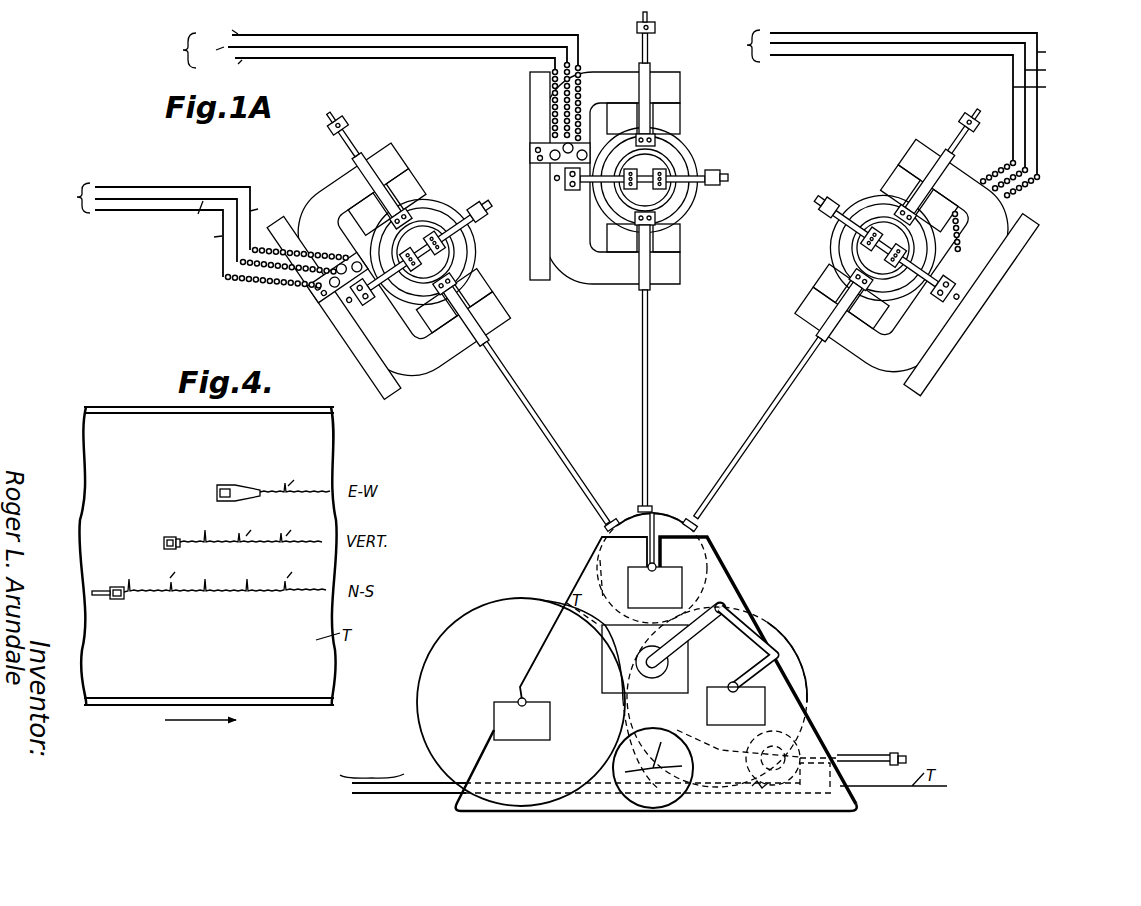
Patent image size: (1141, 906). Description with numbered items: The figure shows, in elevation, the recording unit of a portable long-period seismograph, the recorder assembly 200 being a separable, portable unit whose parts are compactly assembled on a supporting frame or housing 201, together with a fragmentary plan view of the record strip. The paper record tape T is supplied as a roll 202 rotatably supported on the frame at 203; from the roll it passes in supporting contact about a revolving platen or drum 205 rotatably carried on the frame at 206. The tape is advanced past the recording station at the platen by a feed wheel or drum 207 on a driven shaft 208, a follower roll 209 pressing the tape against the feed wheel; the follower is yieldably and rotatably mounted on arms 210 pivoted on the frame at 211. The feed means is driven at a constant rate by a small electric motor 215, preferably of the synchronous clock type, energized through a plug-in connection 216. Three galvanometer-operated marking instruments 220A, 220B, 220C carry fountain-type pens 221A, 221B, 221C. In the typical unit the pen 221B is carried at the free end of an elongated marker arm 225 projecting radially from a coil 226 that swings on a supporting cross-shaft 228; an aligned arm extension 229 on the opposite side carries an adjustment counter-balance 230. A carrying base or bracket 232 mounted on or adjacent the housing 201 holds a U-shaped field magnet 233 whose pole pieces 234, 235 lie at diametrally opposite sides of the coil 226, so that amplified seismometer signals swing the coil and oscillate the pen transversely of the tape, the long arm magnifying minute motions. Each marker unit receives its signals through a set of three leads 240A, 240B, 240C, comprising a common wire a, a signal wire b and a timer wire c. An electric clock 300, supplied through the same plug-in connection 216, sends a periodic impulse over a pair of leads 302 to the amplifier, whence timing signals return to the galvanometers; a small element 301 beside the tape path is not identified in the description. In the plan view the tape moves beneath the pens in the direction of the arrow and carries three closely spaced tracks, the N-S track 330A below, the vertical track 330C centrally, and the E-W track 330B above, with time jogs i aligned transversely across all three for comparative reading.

In FIG. 1A, the recorder assembly 200 is at (770, 550).
In FIG. 1A, the supporting frame or housing 201 is at (812, 722).
In FIG. 1A, the roll 202 is at (427, 663).
In FIG. 1A, the roll support 203 is at (527, 699).
In FIG. 1A, the revolving platen or drum 205 is at (666, 518).
In FIG. 4, the revolving platen or drum 205 is at (294, 706).
In FIG. 1A, the platen mounting 206 is at (655, 585).
In FIG. 1A, the feed wheel or drum 207 is at (797, 653).
In FIG. 1A, the driven shaft 208 is at (731, 683).
In FIG. 1A, the follower roll 209 is at (650, 686).
In FIG. 1A, the arm 210 is at (696, 636).
In FIG. 1A, the pivot 211 is at (727, 606).
In FIG. 1A, the electric motor 215 is at (822, 744).
In FIG. 1A, the plug-in connection 216 is at (841, 744).
In FIG. 1A, the marking or recording instrument 220A is at (483, 376).
In FIG. 1A, the marking or recording instrument 220B is at (875, 307).
In FIG. 1A, the marking or recording instrument 220C is at (686, 314).
In FIG. 1A, the marker, stylus or pen 221A is at (606, 526).
In FIG. 4, the marker, stylus or pen 221A is at (115, 600).
In FIG. 1A, the marker, stylus or pen 221B is at (700, 526).
In FIG. 4, the marker, stylus or pen 221B is at (248, 487).
In FIG. 1A, the marker, stylus or pen 221C is at (641, 505).
In FIG. 4, the marker, stylus or pen 221C is at (166, 537).
In FIG. 1A, the marker arm 225 is at (772, 395).
In FIG. 1A, the coil 226 is at (864, 202).
In FIG. 1A, the supporting cross-shaft 228 is at (838, 230).
In FIG. 1A, the arm extension 229 is at (942, 167).
In FIG. 1A, the adjustment counter-balance 230 is at (960, 117).
In FIG. 1A, the carrying base or bracket 232 is at (993, 270).
In FIG. 1A, the field magnet 233 is at (992, 210).
In FIG. 1A, the pole piece 234 is at (823, 283).
In FIG. 1A, the pole piece 235 is at (893, 170).
In FIG. 1A, the set of three leads 240A is at (118, 226).
In FIG. 1A, the set of three leads 240B is at (1049, 144).
In FIG. 1A, the set of three leads 240C is at (467, 66).
In FIG. 1A, the electric clock 300 is at (685, 793).
In FIG. 1A, the clip 301 is at (762, 791).
In FIG. 1A, the pair of leads 302 is at (378, 786).
In FIG. 4, the record track 330A is at (219, 600).
In FIG. 4, the record track 330B is at (295, 493).
In FIG. 4, the record track 330C is at (229, 545).